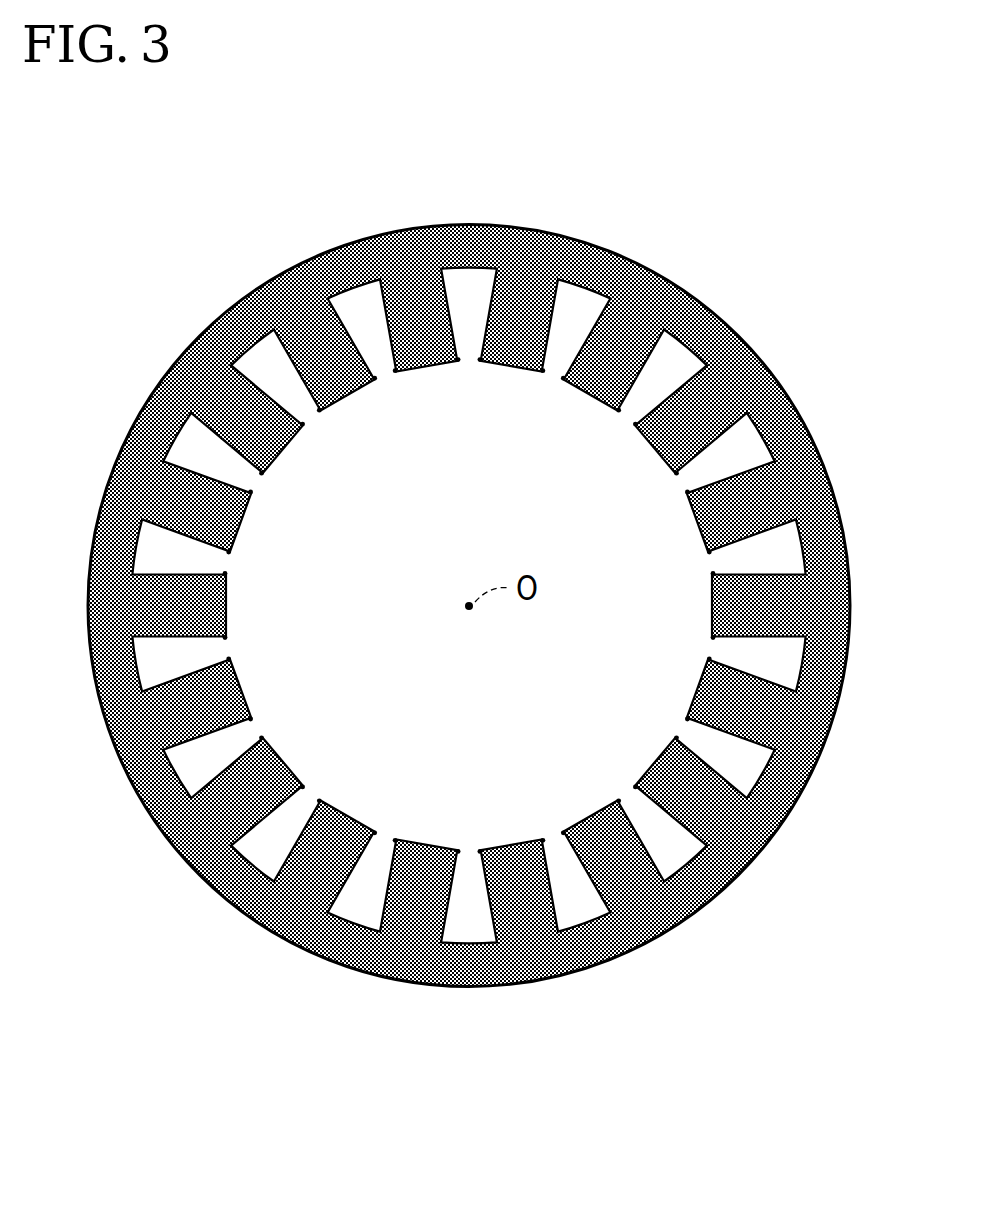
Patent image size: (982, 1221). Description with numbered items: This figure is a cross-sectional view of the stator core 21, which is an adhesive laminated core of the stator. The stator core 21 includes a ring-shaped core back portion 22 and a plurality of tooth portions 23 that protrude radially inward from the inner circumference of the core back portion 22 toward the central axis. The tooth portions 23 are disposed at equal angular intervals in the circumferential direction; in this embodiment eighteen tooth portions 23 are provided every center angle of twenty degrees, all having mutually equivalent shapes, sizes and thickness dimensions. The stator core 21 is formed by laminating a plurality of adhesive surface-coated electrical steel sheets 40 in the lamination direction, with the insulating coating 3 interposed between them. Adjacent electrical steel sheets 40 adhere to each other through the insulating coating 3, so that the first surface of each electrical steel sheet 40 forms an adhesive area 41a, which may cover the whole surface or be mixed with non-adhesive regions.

The insulating coating 3 is at (449, 571).
The electrical steel sheet 40 is at (253, 318).
The stator core 21 is at (449, 571).
The core back portion 22 is at (663, 290).
The tooth portion 23 is at (598, 325).
The adhesive area 41a is at (600, 378).